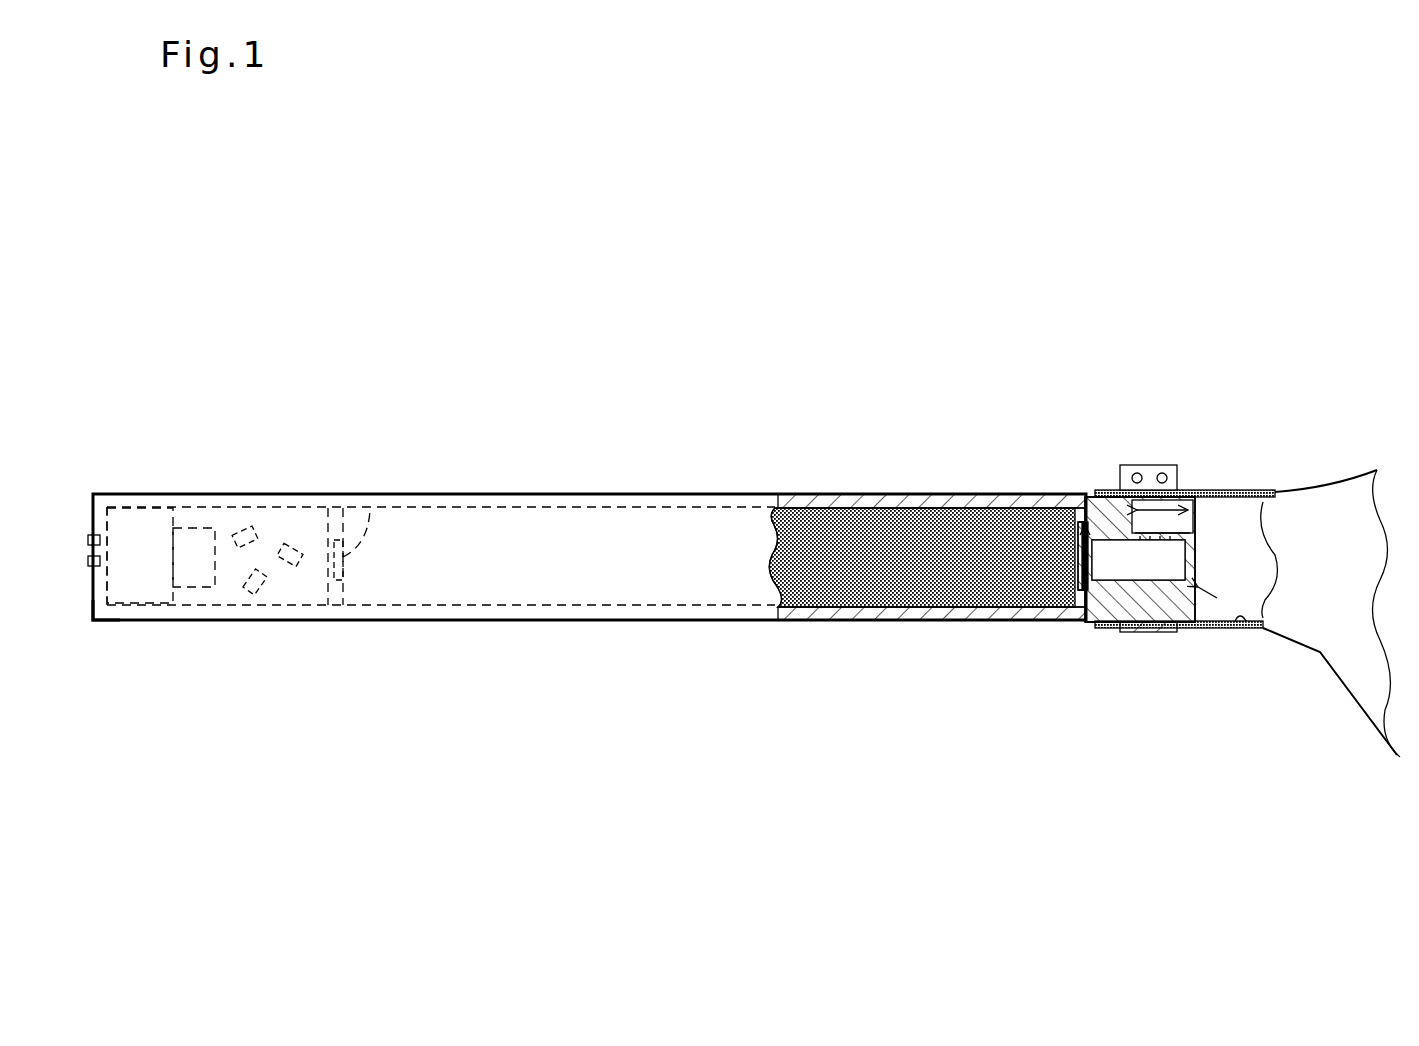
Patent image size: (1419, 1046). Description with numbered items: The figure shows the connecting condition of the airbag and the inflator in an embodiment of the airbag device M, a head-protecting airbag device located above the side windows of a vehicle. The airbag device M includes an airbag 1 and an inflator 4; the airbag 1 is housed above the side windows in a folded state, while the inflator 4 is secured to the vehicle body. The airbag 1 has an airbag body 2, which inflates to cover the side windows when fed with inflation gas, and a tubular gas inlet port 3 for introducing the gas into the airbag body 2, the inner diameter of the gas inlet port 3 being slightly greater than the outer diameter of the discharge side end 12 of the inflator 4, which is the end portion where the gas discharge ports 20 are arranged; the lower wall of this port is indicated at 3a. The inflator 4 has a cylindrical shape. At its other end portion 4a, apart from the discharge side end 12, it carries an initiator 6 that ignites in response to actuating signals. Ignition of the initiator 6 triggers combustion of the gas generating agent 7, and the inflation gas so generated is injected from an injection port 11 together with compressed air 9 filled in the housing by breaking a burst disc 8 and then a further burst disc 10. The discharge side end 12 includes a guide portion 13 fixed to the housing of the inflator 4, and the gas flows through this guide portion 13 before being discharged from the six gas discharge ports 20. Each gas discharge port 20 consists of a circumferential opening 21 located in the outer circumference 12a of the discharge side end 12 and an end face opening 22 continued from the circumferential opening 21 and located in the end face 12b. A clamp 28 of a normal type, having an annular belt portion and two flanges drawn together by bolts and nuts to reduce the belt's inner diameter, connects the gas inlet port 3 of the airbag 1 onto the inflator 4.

The airbag device M is at (232, 346).
The airbag 1 is at (1365, 728).
The airbag body 2 is at (1387, 718).
The gas inlet port 3 is at (1255, 492).
The lower plate 3a is at (1228, 629).
The inflator 4 is at (452, 446).
The other end portion 4a is at (101, 613).
The initiator 6 is at (134, 536).
The gas generating agent 7 is at (268, 600).
The burst disc 8 is at (370, 530).
The compressed air 9 is at (827, 545).
The burst disc 10 is at (1038, 623).
The injection port 11 is at (1033, 495).
The discharge side end 12 is at (1203, 627).
The outer circumference 12a is at (1090, 492).
The end face 12b is at (1222, 495).
The guide portion 13 is at (1103, 625).
The gas discharge ports 20 is at (1225, 418).
The circumferential opening 21 is at (1153, 487).
The end face opening 22 is at (1205, 490).
The clamp 28 is at (1125, 478).